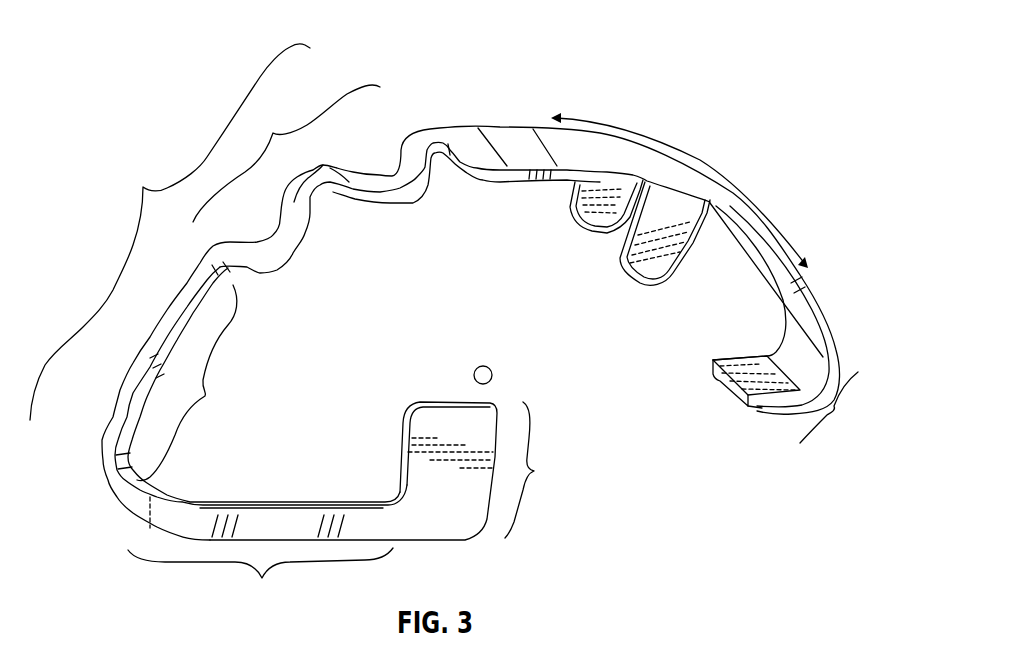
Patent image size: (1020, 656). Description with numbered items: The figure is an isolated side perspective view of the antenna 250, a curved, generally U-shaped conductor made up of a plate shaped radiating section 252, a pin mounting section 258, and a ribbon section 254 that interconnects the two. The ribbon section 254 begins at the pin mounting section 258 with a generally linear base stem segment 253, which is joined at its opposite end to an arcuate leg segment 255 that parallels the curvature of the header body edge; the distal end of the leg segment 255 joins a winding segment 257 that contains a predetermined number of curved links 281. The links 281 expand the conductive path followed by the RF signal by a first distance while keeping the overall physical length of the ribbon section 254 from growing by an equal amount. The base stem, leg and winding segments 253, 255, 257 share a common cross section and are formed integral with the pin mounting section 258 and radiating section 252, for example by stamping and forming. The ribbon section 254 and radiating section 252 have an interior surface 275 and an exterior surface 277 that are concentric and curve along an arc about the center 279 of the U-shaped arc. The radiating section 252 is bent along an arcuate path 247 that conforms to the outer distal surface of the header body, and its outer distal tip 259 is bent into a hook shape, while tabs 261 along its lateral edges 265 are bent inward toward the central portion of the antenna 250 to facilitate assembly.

The arcuate path 247 is at (700, 166).
The antenna 250 is at (820, 294).
The radiating section 252 is at (777, 247).
The base stem segment 253 is at (493, 437).
The ribbon section 254 is at (170, 232).
The leg segment 255 is at (197, 383).
The winding segment 257 is at (286, 153).
The pin mounting section 258 is at (394, 471).
The outer distal tip 259 is at (718, 382).
The tabs 261 is at (650, 268).
The lateral edges 265 is at (730, 232).
The interior surface 275 is at (511, 184).
The exterior surface 277 is at (507, 137).
The center 279 is at (494, 372).
The curved links 281 is at (325, 163).